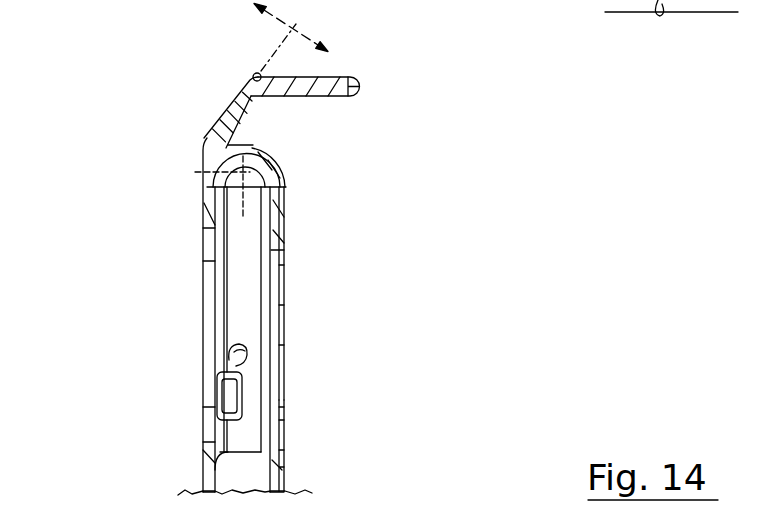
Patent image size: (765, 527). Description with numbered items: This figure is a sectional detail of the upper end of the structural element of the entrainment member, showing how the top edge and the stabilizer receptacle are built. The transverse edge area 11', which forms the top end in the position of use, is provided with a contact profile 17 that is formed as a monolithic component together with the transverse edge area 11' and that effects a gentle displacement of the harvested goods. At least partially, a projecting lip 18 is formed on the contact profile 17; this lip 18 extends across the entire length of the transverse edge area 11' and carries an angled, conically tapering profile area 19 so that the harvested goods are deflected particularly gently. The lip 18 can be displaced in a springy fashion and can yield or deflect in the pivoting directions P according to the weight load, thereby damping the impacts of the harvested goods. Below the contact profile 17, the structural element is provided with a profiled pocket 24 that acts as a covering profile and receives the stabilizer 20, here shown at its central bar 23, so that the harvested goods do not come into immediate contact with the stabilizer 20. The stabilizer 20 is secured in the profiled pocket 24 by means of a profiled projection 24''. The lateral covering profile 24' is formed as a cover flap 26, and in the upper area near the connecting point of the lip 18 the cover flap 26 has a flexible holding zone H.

The transverse edge area 11' is at (174, 270).
The profile area 19 is at (233, 106).
The lip 18 is at (314, 104).
The contact profile 17 is at (467, 72).
The pivoting directions P is at (296, 24).
The flexible holding zone H is at (245, 148).
The profiled pocket 24 is at (178, 334).
The central bar 23 is at (229, 350).
The stabilizer 20 is at (258, 348).
The lateral covering profile 24' is at (368, 293).
The profiled projection 24'' is at (318, 396).
The cover flap 26 is at (282, 410).